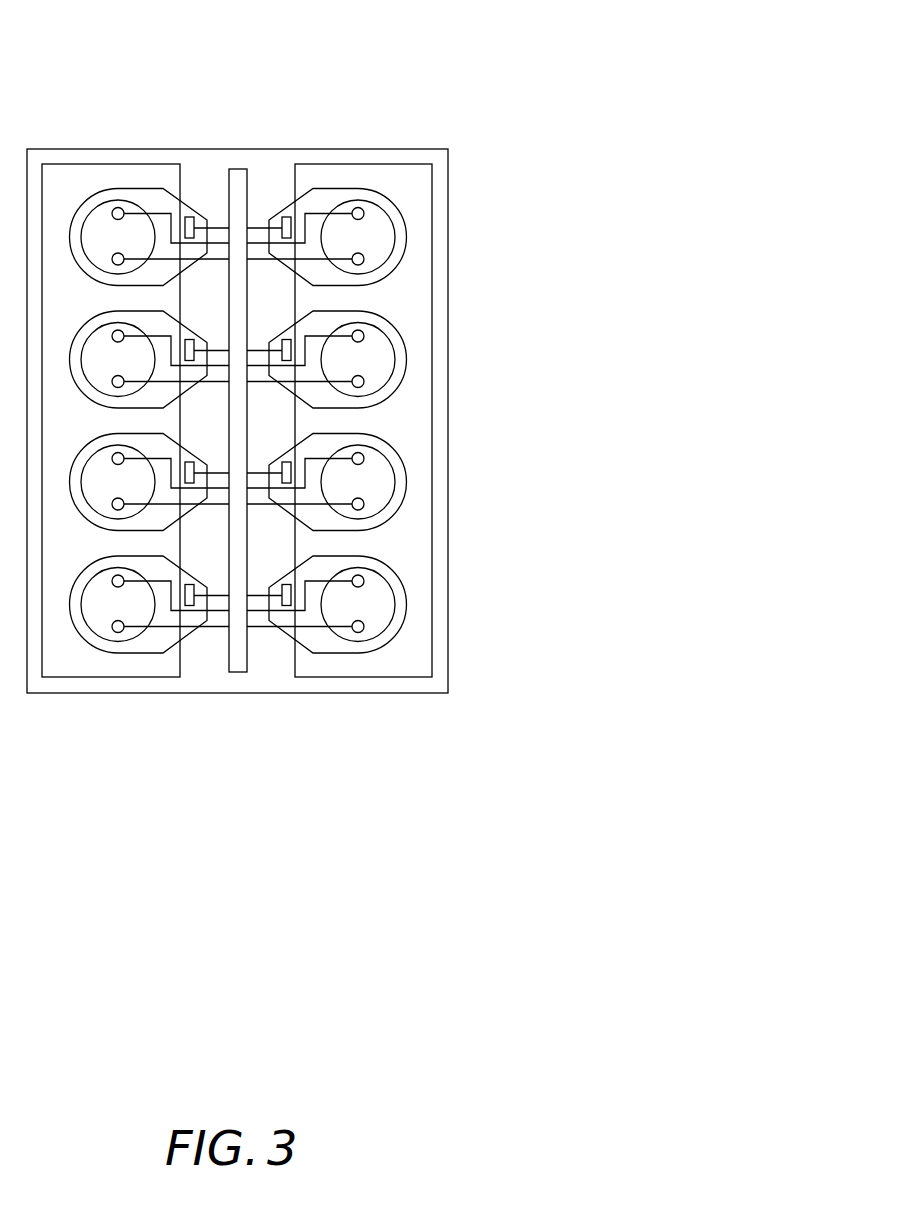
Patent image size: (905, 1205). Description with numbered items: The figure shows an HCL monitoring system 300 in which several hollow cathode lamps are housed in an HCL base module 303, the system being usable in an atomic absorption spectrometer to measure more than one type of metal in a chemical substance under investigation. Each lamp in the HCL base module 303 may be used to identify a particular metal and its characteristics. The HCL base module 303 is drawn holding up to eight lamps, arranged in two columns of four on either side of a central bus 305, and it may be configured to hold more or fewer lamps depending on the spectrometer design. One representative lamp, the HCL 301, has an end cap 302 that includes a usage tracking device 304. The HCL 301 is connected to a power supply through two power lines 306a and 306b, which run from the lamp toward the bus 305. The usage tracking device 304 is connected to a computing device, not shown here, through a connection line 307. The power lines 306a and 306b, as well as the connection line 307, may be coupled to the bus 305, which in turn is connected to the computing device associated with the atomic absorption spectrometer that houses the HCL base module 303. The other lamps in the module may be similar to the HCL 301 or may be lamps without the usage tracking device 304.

The HCL monitoring system 300 is at (437, 97).
The HCL 301 is at (390, 272).
The end cap 302 is at (407, 237).
The HCL base module 303 is at (447, 578).
The usage tracking device 304 is at (286, 217).
The bus 305 is at (240, 169).
The power line 306a is at (354, 207).
The power line 306b is at (250, 258).
The connection line 307 is at (257, 225).